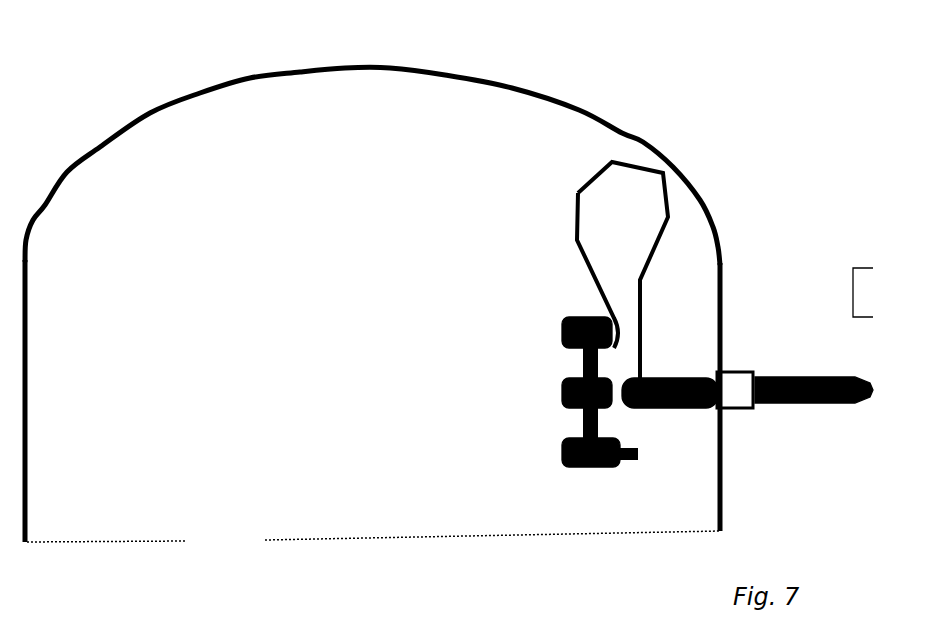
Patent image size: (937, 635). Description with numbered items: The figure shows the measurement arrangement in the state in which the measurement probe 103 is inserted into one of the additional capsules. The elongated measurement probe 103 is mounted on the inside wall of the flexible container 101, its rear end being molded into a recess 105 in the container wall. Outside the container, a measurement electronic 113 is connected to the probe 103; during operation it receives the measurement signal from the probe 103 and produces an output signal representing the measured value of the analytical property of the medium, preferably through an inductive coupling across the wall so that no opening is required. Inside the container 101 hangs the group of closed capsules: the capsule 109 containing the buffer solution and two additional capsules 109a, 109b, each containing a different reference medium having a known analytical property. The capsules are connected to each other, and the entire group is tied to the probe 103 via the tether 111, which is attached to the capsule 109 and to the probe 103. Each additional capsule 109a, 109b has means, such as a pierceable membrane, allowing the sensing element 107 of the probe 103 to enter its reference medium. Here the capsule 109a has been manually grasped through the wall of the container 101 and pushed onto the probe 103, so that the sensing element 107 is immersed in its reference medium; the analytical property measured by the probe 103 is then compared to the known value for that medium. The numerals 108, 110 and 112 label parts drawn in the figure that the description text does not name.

The container 101 is at (260, 77).
The tether 111 is at (582, 190).
The upper clamp block 108 is at (563, 330).
The capsule 109 is at (580, 363).
The additional capsule 109a is at (563, 393).
The lower clamp bar section 110 is at (580, 423).
The additional capsule 109b is at (560, 463).
The sensing element 107 is at (622, 467).
The measurement probe 103 is at (668, 410).
The recess 105 is at (737, 372).
The measurement electronic 113 is at (797, 408).
The bracket 112 is at (850, 288).